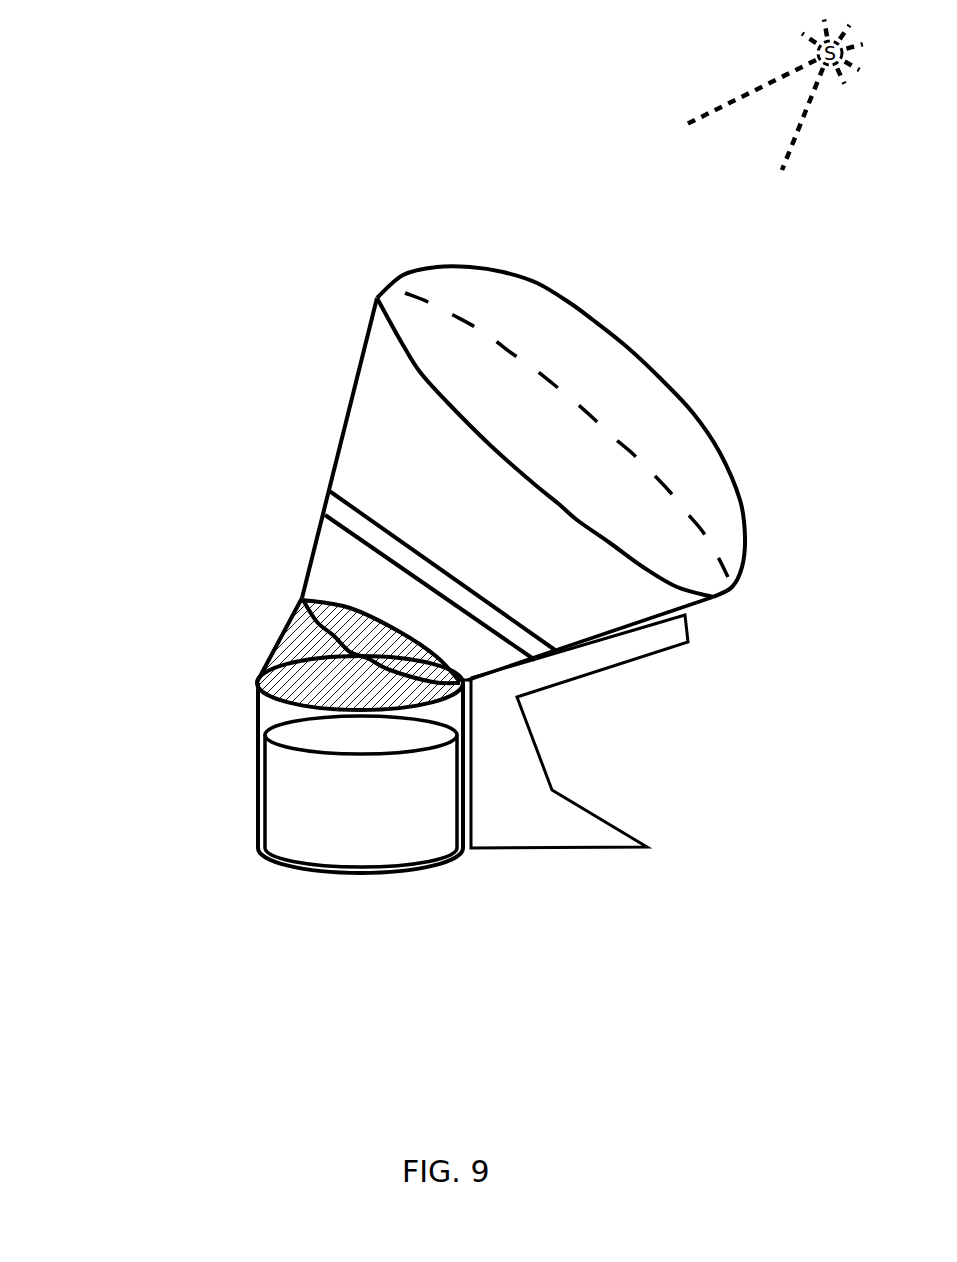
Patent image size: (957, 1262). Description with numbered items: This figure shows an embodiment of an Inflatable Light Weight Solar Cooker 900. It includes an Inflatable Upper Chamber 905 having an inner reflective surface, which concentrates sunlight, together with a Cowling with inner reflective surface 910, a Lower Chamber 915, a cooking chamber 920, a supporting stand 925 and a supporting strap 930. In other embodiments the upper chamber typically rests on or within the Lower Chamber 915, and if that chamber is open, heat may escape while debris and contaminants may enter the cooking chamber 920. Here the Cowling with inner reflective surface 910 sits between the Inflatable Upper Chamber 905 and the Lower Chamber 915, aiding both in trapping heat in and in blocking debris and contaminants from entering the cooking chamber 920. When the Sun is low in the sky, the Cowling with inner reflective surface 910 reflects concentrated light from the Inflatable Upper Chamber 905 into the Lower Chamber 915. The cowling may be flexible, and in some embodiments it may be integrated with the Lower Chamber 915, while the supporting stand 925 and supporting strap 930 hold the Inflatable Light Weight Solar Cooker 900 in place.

The Inflatable Light Weight Solar Cooker 900 is at (142, 87).
The Inflatable Upper Chamber 905 is at (365, 420).
The Cowling with inner reflective surface 910 is at (277, 635).
The Lower Chamber 915 is at (258, 715).
The cooking chamber 920 is at (361, 791).
The supporting stand 925 is at (575, 731).
The supporting strap 930 is at (557, 655).